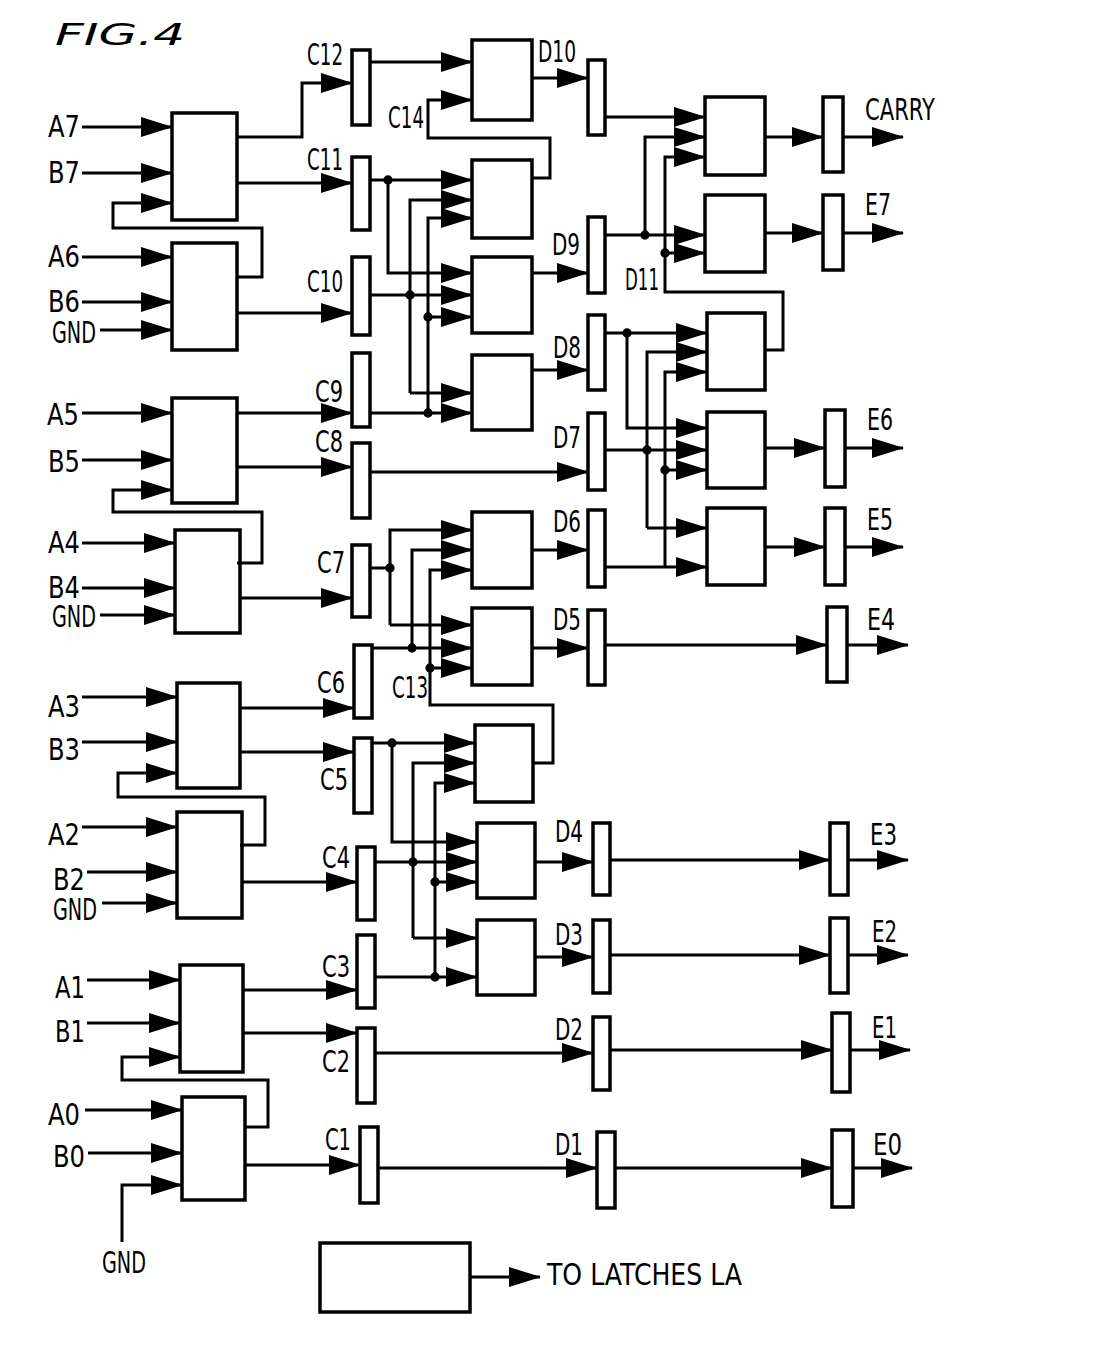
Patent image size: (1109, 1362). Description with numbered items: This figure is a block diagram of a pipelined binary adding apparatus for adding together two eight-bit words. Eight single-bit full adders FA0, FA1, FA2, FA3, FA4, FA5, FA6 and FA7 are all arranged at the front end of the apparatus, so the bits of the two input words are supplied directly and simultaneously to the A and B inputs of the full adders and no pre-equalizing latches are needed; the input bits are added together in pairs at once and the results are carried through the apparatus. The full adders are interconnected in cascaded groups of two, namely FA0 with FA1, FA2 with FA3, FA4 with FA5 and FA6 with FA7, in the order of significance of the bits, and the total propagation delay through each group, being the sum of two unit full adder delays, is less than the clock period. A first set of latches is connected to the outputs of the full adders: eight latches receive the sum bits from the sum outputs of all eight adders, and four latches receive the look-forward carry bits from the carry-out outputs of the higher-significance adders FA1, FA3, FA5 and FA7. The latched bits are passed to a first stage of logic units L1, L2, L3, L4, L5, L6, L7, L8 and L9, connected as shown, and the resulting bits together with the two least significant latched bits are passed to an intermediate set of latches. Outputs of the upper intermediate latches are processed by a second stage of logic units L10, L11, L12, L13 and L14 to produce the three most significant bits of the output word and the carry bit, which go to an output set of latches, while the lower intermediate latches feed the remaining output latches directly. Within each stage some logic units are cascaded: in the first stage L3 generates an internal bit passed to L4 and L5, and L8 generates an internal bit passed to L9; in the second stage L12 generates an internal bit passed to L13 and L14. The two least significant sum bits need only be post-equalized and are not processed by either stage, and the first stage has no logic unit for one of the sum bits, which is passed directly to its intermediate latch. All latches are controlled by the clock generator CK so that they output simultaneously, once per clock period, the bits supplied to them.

The single-bit full adder FA0 is at (222, 1200).
The single-bit full adder FA1 is at (205, 965).
The single-bit full adder FA2 is at (212, 918).
The single-bit full adder FA3 is at (210, 683).
The single-bit full adder FA4 is at (212, 633).
The single-bit full adder FA5 is at (217, 398).
The single-bit full adder FA6 is at (203, 350).
The single-bit full adder FA7 is at (198, 113).
The logic unit L1 is at (506, 958).
The logic unit L2 is at (506, 861).
The logic unit L3 is at (504, 764).
The logic unit L4 is at (502, 647).
The logic unit L5 is at (502, 550).
The logic unit L6 is at (502, 393).
The logic unit L7 is at (502, 295).
The logic unit L8 is at (502, 199).
The logic unit L9 is at (502, 80).
The logic unit L10 is at (736, 547).
The logic unit L11 is at (736, 450).
The logic unit L12 is at (736, 352).
The logic unit L13 is at (735, 234).
The logic unit L14 is at (735, 136).
The clock generator CK is at (395, 1277).